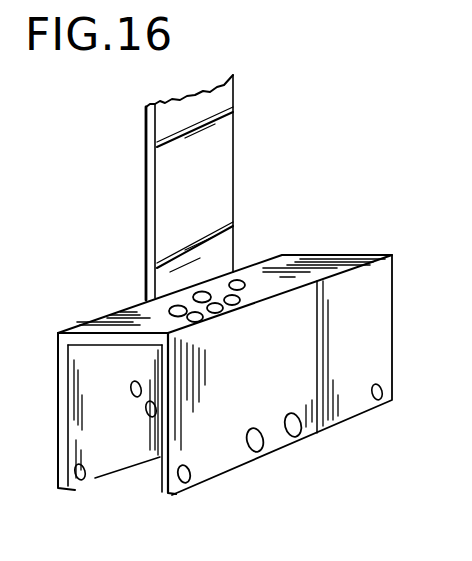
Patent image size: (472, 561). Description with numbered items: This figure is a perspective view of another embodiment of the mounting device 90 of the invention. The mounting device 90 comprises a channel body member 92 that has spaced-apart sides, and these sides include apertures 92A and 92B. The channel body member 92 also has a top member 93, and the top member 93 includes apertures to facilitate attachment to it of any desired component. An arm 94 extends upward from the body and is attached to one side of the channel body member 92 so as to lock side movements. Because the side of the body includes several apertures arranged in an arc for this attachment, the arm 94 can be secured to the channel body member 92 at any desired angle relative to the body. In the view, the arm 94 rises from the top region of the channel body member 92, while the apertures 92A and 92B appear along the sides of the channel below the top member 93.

The mounting device 90 is at (103, 300).
The channel body member 92 is at (378, 333).
The apertures 92A is at (296, 437).
The apertures 92B is at (185, 482).
The top member 93 is at (316, 262).
The arm 94 is at (224, 185).